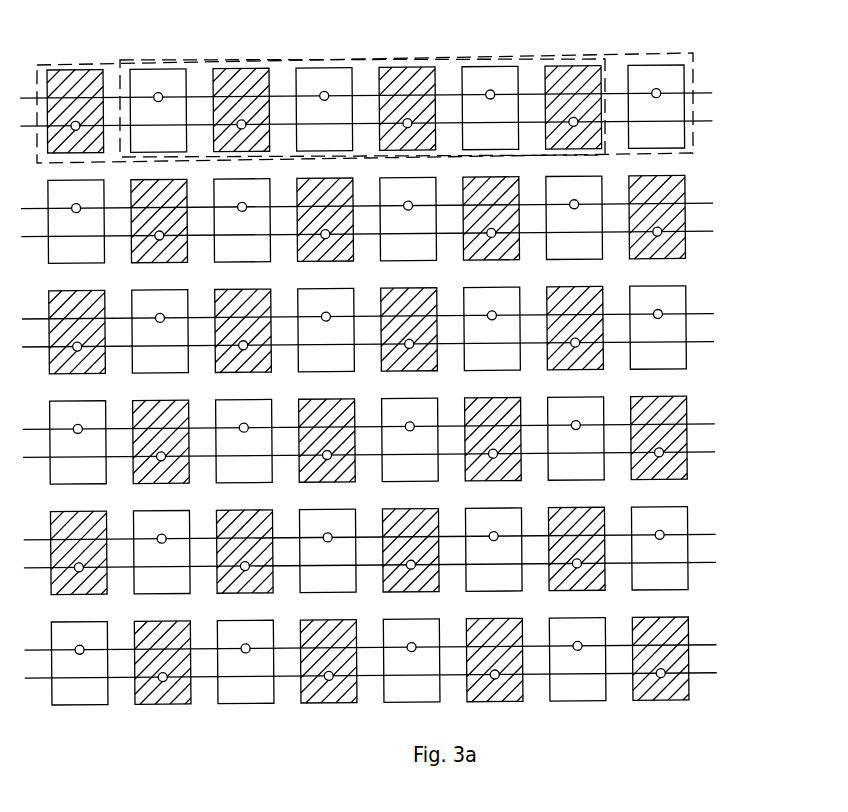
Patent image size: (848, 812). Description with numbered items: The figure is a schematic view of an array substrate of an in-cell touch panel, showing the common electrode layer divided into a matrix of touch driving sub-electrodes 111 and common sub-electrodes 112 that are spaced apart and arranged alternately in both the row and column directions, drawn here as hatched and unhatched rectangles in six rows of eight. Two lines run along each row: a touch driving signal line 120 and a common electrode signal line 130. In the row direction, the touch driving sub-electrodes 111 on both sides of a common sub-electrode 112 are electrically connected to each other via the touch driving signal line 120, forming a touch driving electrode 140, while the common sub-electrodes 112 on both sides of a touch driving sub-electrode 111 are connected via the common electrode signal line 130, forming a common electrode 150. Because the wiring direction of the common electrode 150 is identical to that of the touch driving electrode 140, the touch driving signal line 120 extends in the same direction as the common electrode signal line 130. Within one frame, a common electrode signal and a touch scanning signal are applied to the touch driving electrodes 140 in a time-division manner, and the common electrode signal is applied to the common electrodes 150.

The touch driving sub-electrode 111 is at (570, 69).
The common sub-electrode 112 is at (488, 70).
The touch driving signal line 120 is at (700, 125).
The common electrode signal line 130 is at (700, 95).
The touch driving electrode 140 is at (102, 63).
The common electrode 150 is at (253, 58).